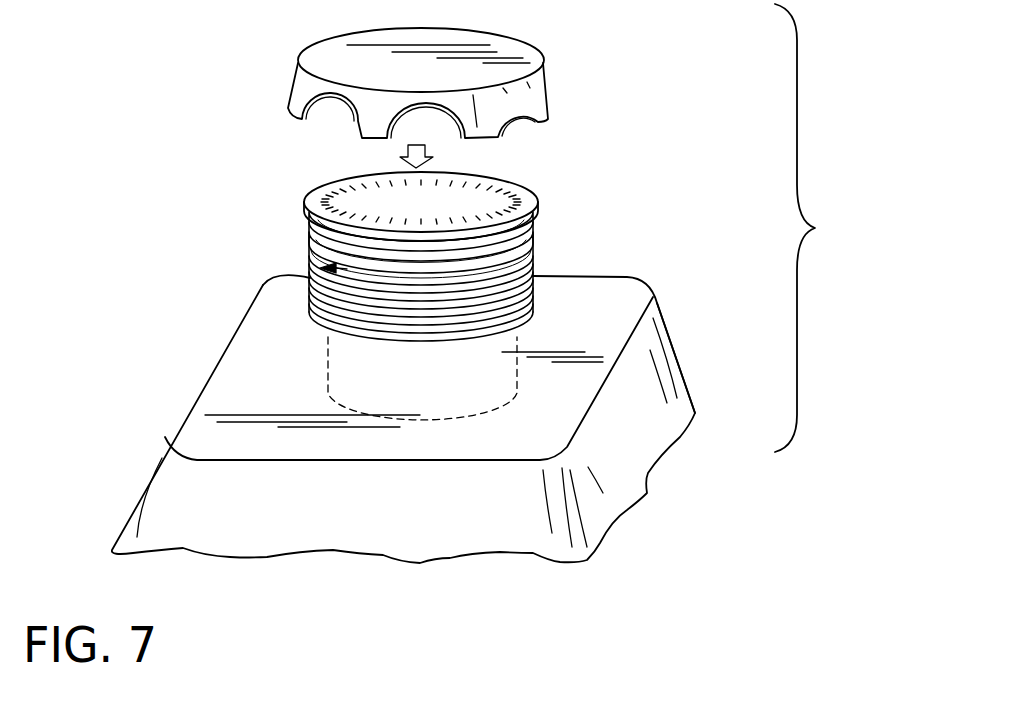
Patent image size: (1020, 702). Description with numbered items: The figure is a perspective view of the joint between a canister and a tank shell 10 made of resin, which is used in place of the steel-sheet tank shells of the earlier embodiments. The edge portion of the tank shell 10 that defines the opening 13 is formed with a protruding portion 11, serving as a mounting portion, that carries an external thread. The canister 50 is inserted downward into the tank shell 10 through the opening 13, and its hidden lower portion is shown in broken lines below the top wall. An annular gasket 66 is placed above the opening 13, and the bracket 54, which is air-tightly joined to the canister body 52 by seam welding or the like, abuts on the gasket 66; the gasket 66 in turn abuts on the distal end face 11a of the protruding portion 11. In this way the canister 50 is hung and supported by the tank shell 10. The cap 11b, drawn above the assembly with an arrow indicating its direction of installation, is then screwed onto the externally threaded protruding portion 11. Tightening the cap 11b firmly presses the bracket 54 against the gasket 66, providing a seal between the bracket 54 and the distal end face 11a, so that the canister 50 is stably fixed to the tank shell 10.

The tank shell 10 is at (647, 269).
The protruding portion 11 is at (308, 291).
The distal end face 11a is at (313, 300).
The cap 11b is at (550, 85).
The opening 13 is at (527, 265).
The canister 50 is at (318, 262).
The canister body 52 is at (313, 232).
The bracket 54 is at (520, 183).
The annular gasket 66 is at (535, 240).